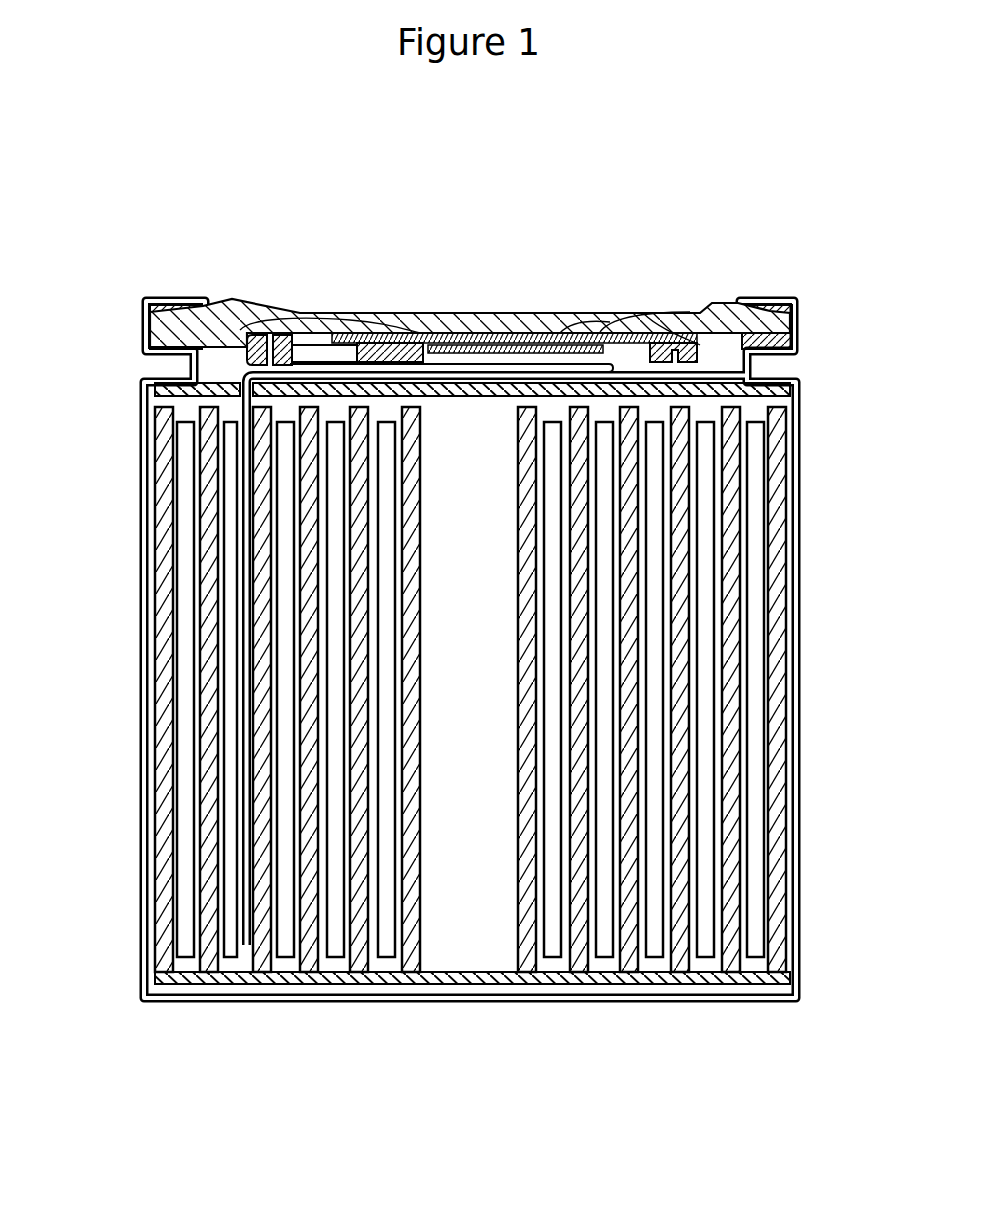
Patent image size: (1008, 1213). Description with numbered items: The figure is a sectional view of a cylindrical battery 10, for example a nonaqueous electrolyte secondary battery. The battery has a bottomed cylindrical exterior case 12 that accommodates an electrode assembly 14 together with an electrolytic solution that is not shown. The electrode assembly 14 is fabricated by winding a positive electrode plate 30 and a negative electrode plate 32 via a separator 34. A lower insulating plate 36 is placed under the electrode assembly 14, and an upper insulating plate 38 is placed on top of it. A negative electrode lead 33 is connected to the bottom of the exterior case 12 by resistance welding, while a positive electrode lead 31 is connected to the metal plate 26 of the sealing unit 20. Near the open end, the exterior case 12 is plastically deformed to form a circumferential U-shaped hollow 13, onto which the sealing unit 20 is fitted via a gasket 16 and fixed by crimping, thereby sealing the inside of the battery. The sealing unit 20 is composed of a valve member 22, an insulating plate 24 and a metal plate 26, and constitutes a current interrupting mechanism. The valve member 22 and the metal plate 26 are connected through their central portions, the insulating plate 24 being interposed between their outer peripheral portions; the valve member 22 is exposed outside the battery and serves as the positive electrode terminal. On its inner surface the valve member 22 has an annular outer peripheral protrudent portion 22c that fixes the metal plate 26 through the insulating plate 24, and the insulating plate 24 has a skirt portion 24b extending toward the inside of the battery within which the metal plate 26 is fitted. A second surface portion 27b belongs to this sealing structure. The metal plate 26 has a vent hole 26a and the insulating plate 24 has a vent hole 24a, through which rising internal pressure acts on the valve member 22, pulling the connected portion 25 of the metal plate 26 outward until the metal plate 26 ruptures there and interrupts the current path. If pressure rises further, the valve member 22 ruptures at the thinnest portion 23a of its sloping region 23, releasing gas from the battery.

The cylindrical battery 10 is at (593, 178).
The exterior case 12 is at (142, 580).
The U-shaped hollow 13 is at (247, 350).
The electrode assembly 14 is at (150, 660).
The gasket 16 is at (155, 325).
The sealing unit 20 is at (268, 300).
The valve member 22 is at (363, 322).
The protrudent portion 22c is at (700, 372).
The sloping region 23 is at (628, 310).
The thinnest portion 23a is at (650, 310).
The insulating plate 24 is at (378, 332).
The vent hole 24a is at (703, 330).
The skirt portion 24b is at (245, 358).
The connected portion 25 is at (483, 345).
The metal plate 26 is at (450, 338).
The vent hole 26a is at (598, 330).
The second surface portion 27b is at (640, 392).
The positive electrode plate 30 is at (263, 958).
The positive electrode lead 31 is at (243, 915).
The negative electrode plate 32 is at (310, 957).
The negative electrode lead 33 is at (473, 990).
The separator 34 is at (290, 947).
The lower insulating plate 36 is at (175, 962).
The upper insulating plate 38 is at (187, 397).